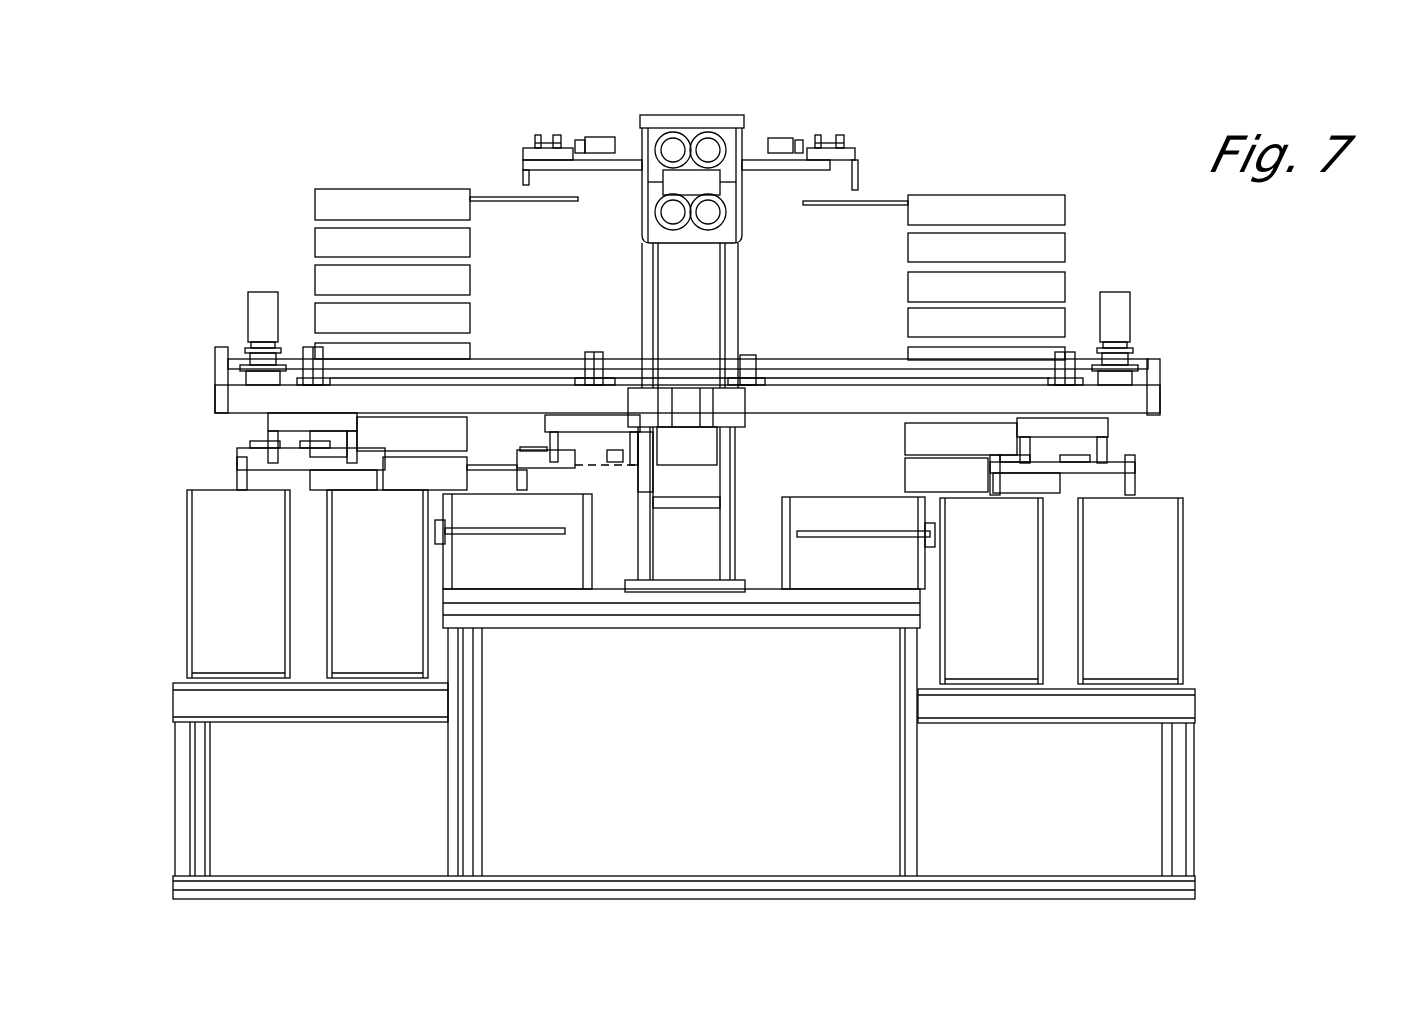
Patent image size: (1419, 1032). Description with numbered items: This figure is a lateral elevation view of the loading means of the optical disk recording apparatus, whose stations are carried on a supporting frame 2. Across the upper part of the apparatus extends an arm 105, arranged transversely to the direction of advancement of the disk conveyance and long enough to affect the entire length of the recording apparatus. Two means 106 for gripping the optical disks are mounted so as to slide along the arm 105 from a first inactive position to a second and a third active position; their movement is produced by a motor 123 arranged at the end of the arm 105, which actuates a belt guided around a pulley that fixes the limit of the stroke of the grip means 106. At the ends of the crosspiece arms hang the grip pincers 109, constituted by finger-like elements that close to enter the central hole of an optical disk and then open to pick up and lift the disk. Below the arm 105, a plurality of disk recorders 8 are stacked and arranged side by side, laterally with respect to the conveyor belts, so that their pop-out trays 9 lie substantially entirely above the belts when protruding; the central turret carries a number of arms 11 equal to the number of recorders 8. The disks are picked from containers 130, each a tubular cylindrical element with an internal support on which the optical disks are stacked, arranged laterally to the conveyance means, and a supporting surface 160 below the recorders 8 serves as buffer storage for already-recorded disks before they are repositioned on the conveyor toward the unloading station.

The supporting frame 2 is at (1190, 812).
The disk recorders 8 is at (388, 205).
The pop-out trays 9 is at (527, 205).
The arms 11 is at (755, 160).
The arm 105 is at (1132, 400).
The means for gripping the optical disks 106 is at (215, 450).
The grip pincers 109 is at (238, 475).
The motor 123 is at (268, 300).
The containers 130 is at (205, 632).
The supporting surface 160 is at (560, 534).